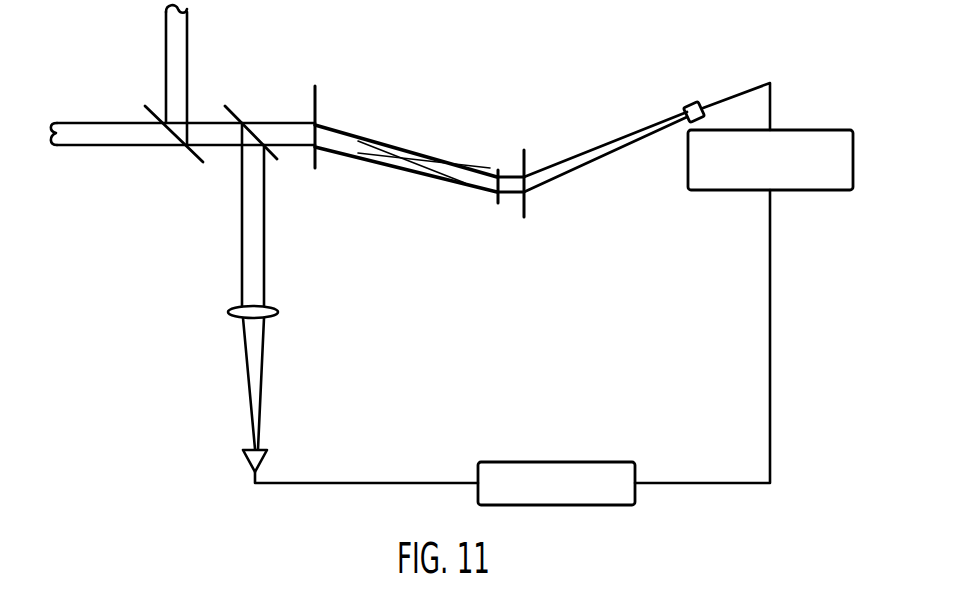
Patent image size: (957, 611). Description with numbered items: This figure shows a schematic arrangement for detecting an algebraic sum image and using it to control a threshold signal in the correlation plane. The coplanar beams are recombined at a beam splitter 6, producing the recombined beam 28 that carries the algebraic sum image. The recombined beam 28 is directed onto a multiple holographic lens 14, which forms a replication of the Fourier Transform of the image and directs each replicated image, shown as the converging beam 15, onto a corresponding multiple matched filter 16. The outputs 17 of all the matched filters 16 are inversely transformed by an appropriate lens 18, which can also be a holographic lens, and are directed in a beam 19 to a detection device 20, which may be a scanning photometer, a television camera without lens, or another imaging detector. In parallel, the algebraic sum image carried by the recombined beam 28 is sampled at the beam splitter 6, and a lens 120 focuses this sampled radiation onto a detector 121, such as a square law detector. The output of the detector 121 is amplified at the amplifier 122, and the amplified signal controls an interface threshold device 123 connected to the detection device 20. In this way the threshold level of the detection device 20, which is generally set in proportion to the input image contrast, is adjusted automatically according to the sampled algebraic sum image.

The beam splitter 6 is at (236, 114).
The recombined beam 28 is at (283, 123).
The multiple holographic lens 14 is at (315, 168).
The focused light beam 15 is at (437, 158).
The multiple matched filter 16 is at (498, 198).
The outputs 17 is at (513, 177).
The lens 18 is at (527, 209).
The beam 19 is at (635, 141).
The detection device 20 is at (702, 105).
The lens 120 is at (272, 313).
The detector 121 is at (262, 450).
The amplifier 122 is at (557, 462).
The interface threshold device 123 is at (730, 190).